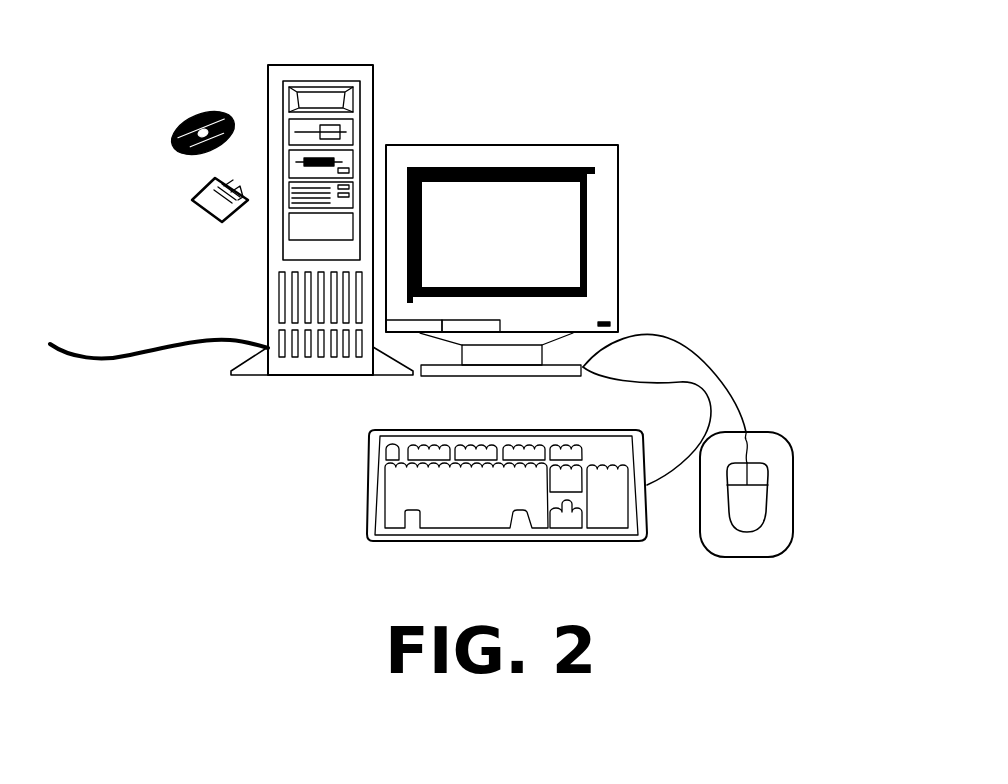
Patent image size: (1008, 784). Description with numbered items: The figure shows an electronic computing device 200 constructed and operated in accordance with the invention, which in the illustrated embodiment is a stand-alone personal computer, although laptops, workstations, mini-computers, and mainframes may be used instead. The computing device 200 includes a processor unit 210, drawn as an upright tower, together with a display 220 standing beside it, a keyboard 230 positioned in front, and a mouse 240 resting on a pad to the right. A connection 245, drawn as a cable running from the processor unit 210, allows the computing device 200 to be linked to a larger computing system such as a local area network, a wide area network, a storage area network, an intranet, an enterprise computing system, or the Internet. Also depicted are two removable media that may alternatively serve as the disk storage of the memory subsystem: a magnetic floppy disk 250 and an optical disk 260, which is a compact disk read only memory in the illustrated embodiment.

The electronic computing device 200 is at (178, 42).
The processor unit 210 is at (367, 192).
The display 220 is at (562, 232).
The keyboard 230 is at (475, 482).
The mouse 240 is at (735, 446).
The connection 245 is at (147, 373).
The magnetic floppy disk 250 is at (168, 226).
The optical disk 260 is at (145, 152).